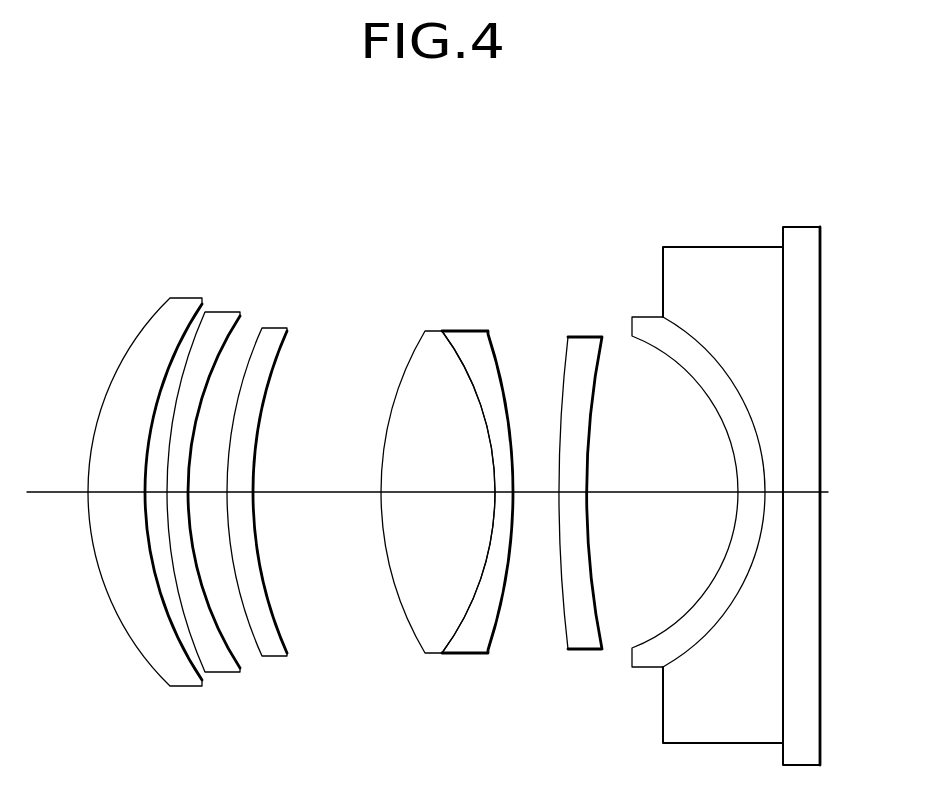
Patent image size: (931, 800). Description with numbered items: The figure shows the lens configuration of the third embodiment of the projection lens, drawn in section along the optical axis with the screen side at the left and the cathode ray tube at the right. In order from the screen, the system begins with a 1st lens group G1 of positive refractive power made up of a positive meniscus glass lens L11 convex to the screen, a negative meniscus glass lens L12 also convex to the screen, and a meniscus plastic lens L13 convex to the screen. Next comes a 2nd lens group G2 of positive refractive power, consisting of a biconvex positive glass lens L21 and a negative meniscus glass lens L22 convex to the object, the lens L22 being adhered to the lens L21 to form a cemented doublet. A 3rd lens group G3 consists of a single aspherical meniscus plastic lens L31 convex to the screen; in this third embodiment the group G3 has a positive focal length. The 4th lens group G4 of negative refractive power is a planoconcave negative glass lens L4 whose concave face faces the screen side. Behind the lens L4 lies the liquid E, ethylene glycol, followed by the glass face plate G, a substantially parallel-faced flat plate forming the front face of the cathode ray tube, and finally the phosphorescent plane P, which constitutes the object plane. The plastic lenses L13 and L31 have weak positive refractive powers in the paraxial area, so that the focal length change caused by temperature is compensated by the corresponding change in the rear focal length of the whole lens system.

The 1st lens group G1 is at (307, 210).
The positive meniscus glass lens L11 is at (170, 308).
The negative meniscus glass lens L12 is at (223, 317).
The meniscus plastic lens L13 is at (278, 332).
The 2nd lens group G2 is at (503, 210).
The biconvex positive glass lens L21 is at (432, 337).
The negative meniscus glass lens L22 is at (478, 340).
The 3rd lens group G3 is at (607, 210).
The aspherical meniscus plastic lens L31 is at (583, 343).
The 4th lens group G4 is at (674, 166).
The planoconcave negative glass lens L4 is at (648, 313).
The liquid E is at (737, 252).
The glass face plate G is at (800, 228).
The phosphorescent plane P is at (822, 242).